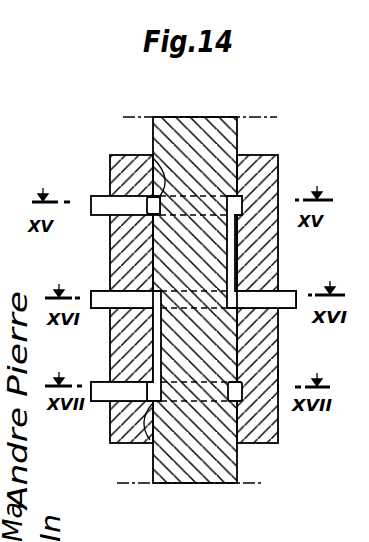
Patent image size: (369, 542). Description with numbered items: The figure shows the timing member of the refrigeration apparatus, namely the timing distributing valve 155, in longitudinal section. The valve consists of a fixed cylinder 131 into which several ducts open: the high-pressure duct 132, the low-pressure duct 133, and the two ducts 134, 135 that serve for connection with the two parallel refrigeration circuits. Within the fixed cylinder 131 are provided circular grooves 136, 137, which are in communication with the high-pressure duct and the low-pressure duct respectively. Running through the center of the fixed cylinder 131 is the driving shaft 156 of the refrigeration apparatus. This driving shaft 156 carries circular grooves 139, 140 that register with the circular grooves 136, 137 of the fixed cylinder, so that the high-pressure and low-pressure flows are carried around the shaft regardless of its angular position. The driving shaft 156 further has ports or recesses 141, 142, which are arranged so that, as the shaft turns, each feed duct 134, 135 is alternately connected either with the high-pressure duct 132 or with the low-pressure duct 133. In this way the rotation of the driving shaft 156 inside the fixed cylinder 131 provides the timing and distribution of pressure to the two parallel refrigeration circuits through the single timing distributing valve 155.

The fixed cylinder 131 is at (264, 190).
The high-pressure duct 132 is at (91, 200).
The low-pressure duct 133 is at (102, 407).
The duct 134 is at (113, 300).
The duct 135 is at (272, 302).
The circular groove 136 is at (148, 205).
The circular groove 137 is at (137, 444).
The circular groove 139 is at (153, 157).
The circular groove 140 is at (243, 444).
The port or recess 141 is at (155, 363).
The port or recess 142 is at (232, 253).
The timing distributing valve 155 is at (288, 377).
The driving shaft 156 is at (224, 132).